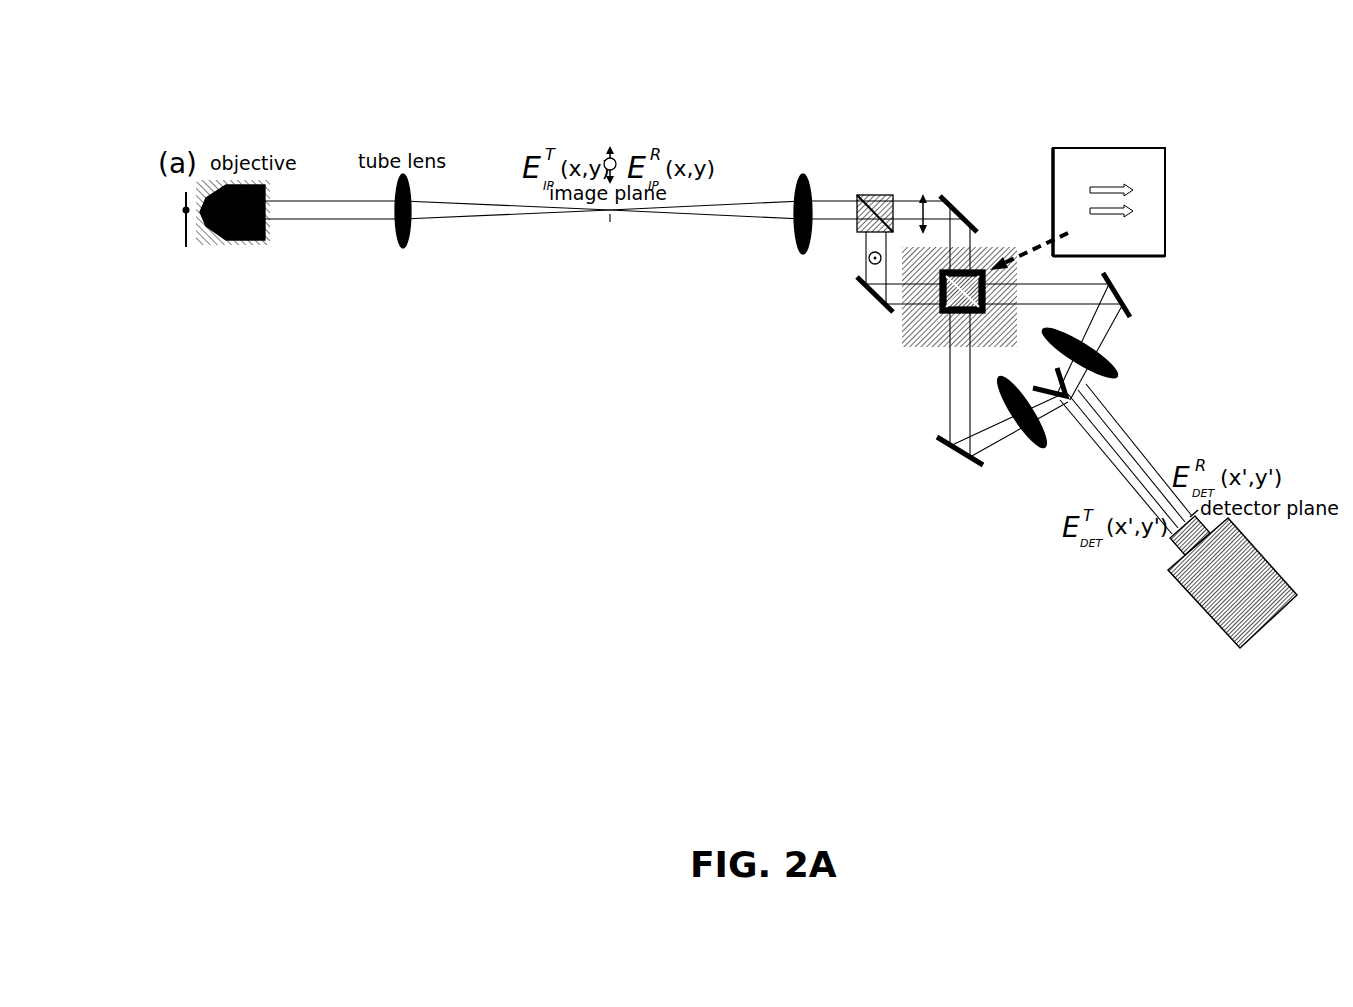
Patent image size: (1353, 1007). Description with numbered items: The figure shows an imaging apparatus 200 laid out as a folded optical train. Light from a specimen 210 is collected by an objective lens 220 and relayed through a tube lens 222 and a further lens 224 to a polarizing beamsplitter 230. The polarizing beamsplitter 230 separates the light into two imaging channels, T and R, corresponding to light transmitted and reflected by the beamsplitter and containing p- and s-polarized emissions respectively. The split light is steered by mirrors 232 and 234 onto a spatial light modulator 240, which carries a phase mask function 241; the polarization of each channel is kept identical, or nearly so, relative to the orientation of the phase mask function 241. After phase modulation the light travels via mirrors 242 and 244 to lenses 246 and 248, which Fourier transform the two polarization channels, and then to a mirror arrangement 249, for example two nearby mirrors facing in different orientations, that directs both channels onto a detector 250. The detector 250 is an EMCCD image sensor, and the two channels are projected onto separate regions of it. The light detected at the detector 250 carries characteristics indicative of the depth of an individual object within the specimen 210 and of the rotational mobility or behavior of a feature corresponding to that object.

The imaging apparatus 200 is at (1188, 25).
The specimen 210 is at (184, 208).
The objective lens 220 is at (262, 190).
The tube lens 222 is at (410, 186).
The further lens 224 is at (800, 180).
The polarizing beamsplitter 230 is at (878, 234).
The mirror 232 is at (965, 205).
The mirror 234 is at (882, 310).
The spatial light modulator 240 is at (935, 347).
The phase mask function 241 is at (1148, 148).
The mirror 242 is at (1130, 292).
The mirror 244 is at (957, 460).
The lens 246 is at (1115, 360).
The lens 248 is at (1032, 432).
The mirror arrangement 249 is at (1057, 385).
The detector 250 is at (1258, 548).